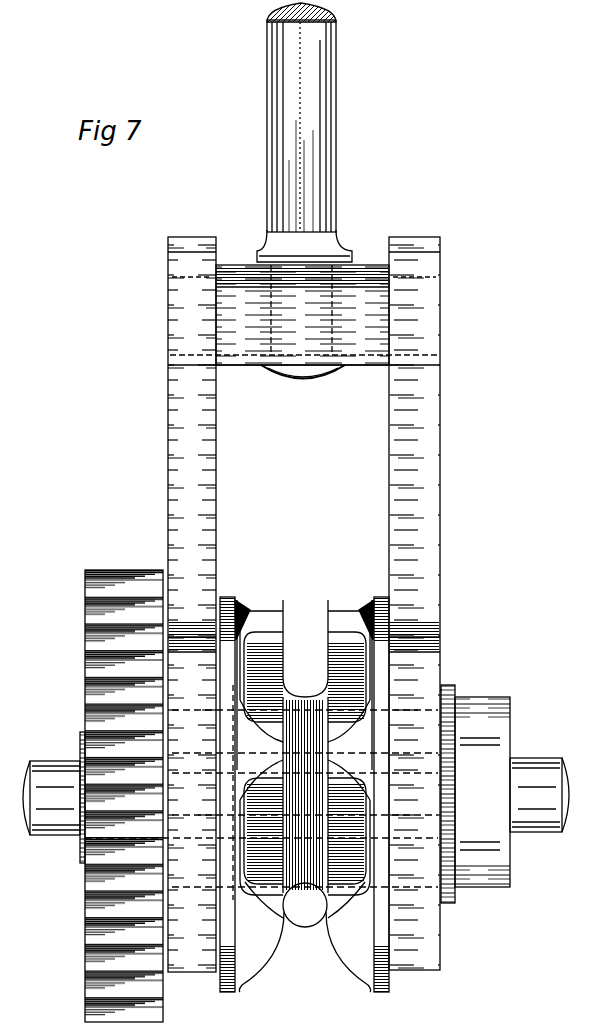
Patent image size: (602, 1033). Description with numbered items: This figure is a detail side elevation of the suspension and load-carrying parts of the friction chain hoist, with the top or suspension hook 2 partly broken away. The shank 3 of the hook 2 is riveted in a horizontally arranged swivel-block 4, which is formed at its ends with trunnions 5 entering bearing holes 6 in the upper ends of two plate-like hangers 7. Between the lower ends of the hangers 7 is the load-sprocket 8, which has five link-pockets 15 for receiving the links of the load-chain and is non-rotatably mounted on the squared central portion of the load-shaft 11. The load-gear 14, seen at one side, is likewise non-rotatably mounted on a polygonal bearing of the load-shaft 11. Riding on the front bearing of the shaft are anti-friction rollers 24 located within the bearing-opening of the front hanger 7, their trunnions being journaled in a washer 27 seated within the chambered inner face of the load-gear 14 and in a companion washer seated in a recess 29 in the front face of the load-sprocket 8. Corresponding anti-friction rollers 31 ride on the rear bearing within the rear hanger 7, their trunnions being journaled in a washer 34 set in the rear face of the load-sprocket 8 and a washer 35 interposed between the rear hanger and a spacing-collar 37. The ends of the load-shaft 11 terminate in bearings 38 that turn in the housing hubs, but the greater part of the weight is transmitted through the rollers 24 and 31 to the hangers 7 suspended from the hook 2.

The top or suspension hook 2 is at (267, 54).
The shank 3 is at (283, 376).
The swivel-block 4 is at (374, 366).
The trunnions 5 is at (176, 352).
The bearing holes 6 is at (176, 284).
The plate-like hangers 7 is at (168, 487).
The load-sprocket 8 is at (263, 611).
The load-shaft 11 is at (42, 762).
The load-gear 14 is at (85, 631).
The link-pockets 15 is at (283, 690).
The anti-friction rollers 24 is at (199, 890).
The washer 27 is at (95, 883).
The recess 29 is at (232, 697).
The anti-friction rollers 31 is at (420, 890).
The washer 34 is at (392, 688).
The washer 35 is at (456, 690).
The spacing-collar 37 is at (512, 711).
The bearings 38 is at (296, 798).